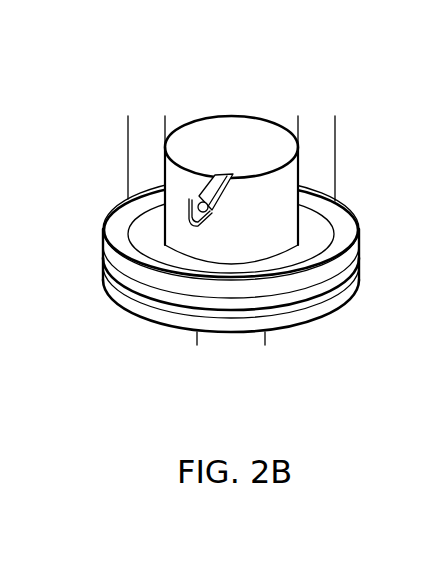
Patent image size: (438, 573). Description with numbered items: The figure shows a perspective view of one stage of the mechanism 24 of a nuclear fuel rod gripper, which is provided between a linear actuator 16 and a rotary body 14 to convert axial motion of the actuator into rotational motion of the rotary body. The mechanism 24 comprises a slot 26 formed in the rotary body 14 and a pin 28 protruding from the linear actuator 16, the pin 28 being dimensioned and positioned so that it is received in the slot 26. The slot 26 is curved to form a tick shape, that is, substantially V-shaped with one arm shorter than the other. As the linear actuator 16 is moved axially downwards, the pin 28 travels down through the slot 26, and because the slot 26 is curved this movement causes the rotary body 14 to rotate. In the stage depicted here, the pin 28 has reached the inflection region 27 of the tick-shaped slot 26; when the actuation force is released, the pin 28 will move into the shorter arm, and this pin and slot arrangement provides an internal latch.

The rotary body 14 is at (307, 293).
The linear actuator 16 is at (323, 168).
The mechanism 24 is at (188, 192).
The slot 26 is at (221, 174).
The inflection region 27 is at (186, 231).
The pin 28 is at (212, 199).